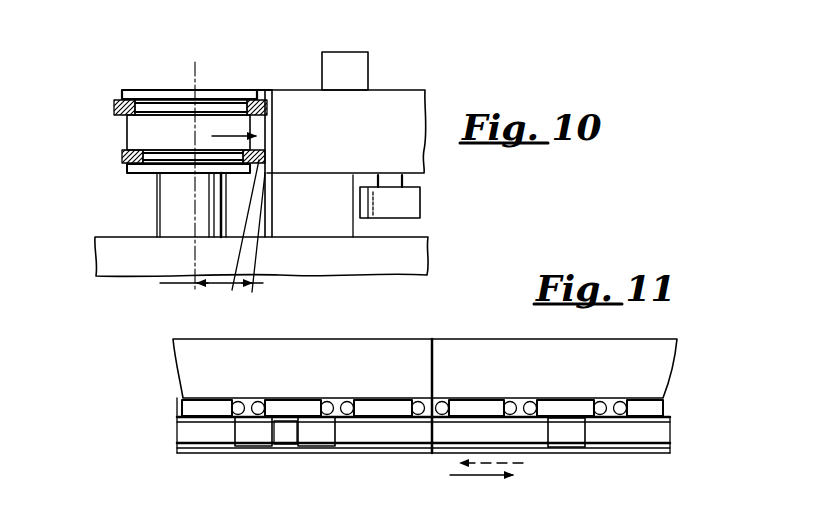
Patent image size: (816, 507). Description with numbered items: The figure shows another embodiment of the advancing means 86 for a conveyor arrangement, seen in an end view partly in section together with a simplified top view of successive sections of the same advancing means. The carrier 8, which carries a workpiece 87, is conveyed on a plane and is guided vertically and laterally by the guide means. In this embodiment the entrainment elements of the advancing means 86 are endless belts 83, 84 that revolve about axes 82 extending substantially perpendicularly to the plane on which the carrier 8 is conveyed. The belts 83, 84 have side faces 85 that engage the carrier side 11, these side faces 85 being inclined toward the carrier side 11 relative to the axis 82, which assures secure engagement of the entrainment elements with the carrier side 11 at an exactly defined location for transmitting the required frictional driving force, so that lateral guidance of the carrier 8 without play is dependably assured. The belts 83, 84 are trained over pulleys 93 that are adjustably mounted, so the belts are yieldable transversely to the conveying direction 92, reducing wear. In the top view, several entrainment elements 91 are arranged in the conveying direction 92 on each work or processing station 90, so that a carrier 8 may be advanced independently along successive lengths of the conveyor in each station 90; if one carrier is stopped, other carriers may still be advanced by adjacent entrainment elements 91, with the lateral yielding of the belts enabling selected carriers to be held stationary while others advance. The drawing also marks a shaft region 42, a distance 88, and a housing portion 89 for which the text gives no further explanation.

In FIG. 10, the carrier 8 is at (402, 100).
In FIG. 11, the carrier 8 is at (253, 446).
In FIG. 10, the carrier side 11 is at (236, 283).
In FIG. 10, the shaft 42 is at (230, 136).
In FIG. 10, the axis 82 is at (200, 74).
In FIG. 10, the endless belt 83 is at (114, 108).
In FIG. 10, the endless belt 84 is at (122, 156).
In FIG. 10, the side face 85 is at (267, 103).
In FIG. 10, the advancing means 86 is at (154, 58).
In FIG. 10, the workpiece 87 is at (352, 68).
In FIG. 10, the distance 88 is at (222, 285).
In FIG. 11, the housing 89 is at (373, 362).
In FIG. 11, the work or processing station 90 is at (470, 360).
In FIG. 10, the entrainment element 91 is at (160, 84).
In FIG. 11, the entrainment element 91 is at (303, 398).
In FIG. 11, the conveying direction 92 is at (452, 476).
In FIG. 10, the pulley 93 is at (127, 135).